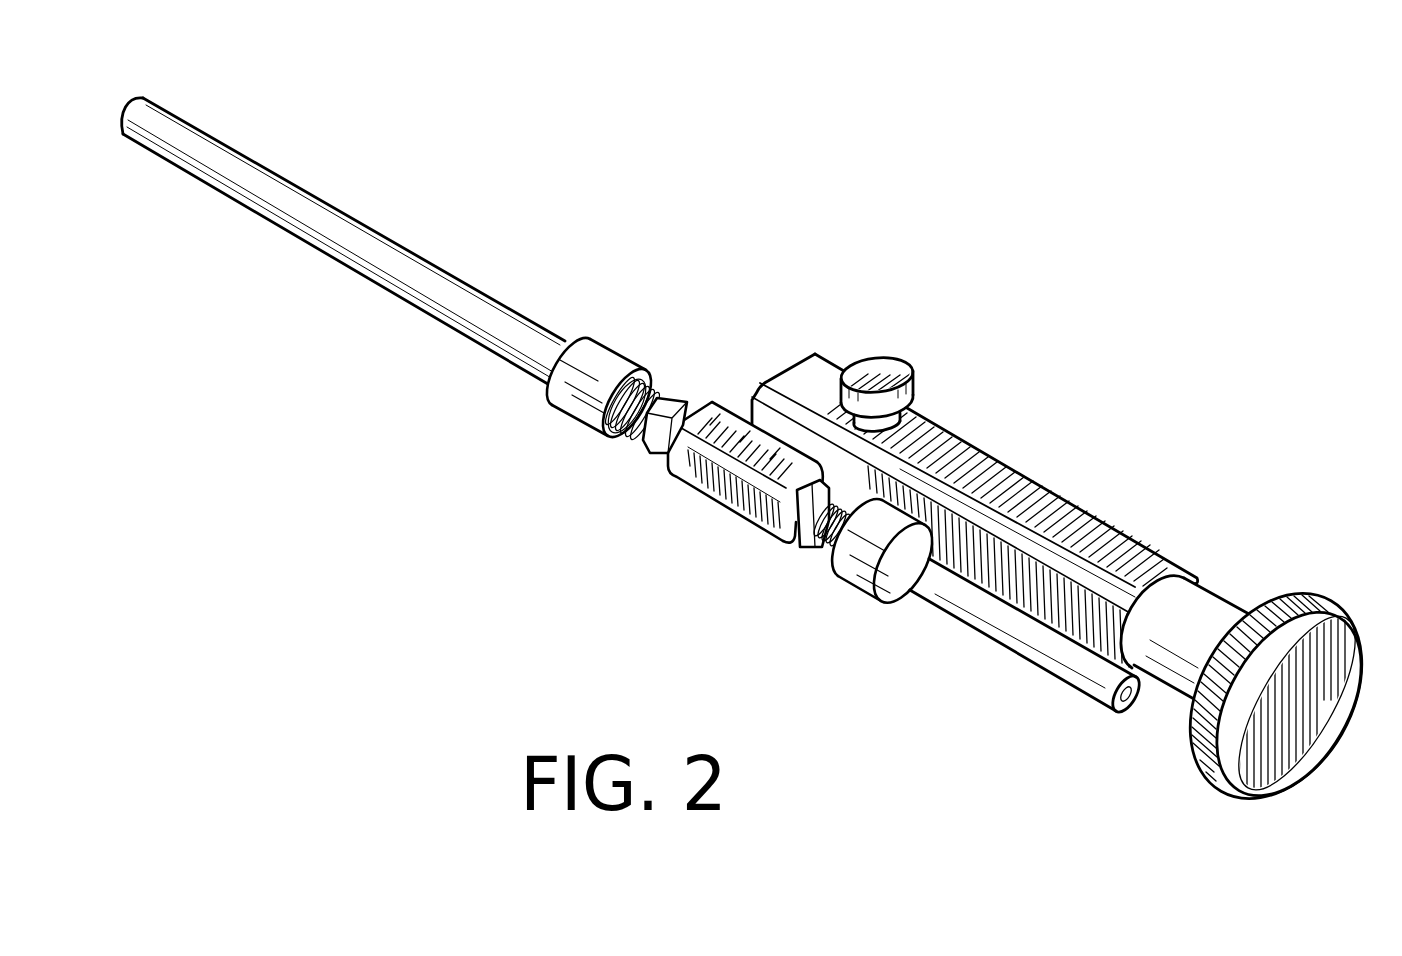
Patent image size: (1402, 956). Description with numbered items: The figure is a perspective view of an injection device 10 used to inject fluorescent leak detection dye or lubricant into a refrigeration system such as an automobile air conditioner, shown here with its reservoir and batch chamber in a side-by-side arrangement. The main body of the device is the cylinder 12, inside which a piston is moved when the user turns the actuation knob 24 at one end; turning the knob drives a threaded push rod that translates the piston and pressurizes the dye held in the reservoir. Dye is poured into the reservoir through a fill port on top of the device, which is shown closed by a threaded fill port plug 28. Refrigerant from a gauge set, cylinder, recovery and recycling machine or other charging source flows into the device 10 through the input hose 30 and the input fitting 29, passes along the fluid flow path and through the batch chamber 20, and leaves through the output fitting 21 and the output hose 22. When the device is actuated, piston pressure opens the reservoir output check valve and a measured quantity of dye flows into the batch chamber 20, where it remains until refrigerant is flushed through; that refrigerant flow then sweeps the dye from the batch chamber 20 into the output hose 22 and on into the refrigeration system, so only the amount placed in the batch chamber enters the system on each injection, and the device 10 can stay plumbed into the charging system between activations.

The injection device 10 is at (1115, 316).
The cylinder 12 is at (997, 485).
The batch chamber 20 is at (712, 477).
The output fitting 21 is at (661, 397).
The output hose 22 is at (212, 157).
The actuation knob 24 is at (1313, 727).
The threaded fill port plug 28 is at (878, 375).
The input fitting 29 is at (800, 530).
The input hose 30 is at (995, 618).